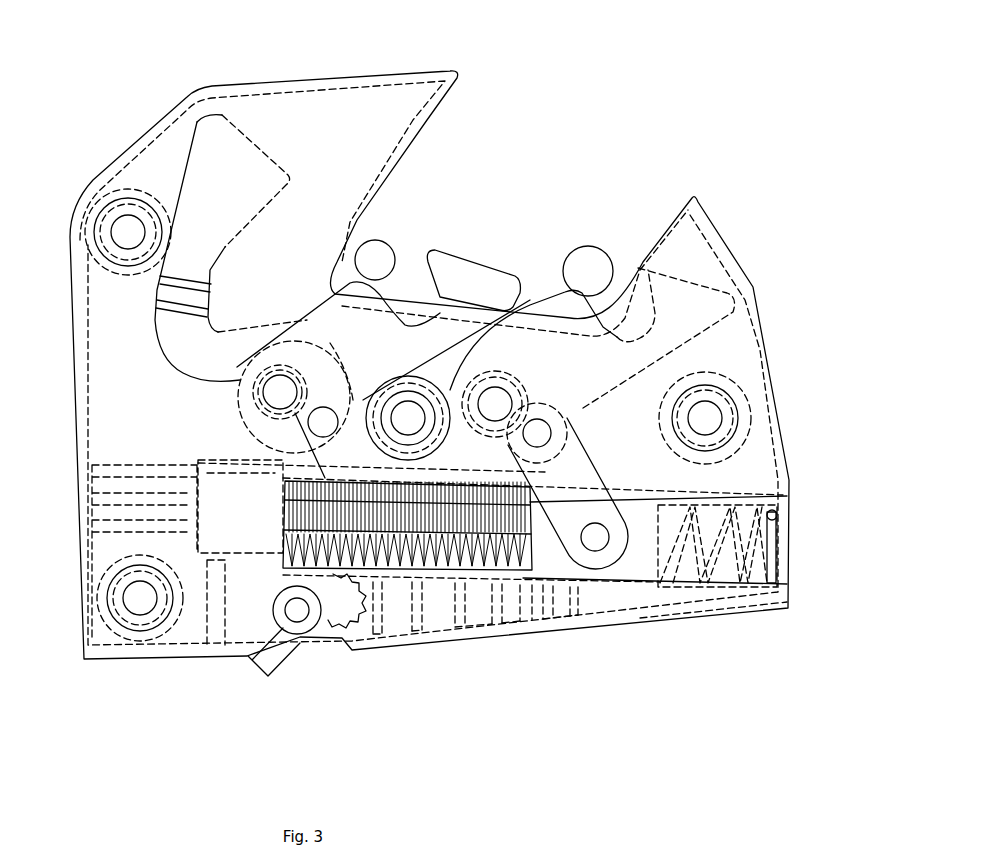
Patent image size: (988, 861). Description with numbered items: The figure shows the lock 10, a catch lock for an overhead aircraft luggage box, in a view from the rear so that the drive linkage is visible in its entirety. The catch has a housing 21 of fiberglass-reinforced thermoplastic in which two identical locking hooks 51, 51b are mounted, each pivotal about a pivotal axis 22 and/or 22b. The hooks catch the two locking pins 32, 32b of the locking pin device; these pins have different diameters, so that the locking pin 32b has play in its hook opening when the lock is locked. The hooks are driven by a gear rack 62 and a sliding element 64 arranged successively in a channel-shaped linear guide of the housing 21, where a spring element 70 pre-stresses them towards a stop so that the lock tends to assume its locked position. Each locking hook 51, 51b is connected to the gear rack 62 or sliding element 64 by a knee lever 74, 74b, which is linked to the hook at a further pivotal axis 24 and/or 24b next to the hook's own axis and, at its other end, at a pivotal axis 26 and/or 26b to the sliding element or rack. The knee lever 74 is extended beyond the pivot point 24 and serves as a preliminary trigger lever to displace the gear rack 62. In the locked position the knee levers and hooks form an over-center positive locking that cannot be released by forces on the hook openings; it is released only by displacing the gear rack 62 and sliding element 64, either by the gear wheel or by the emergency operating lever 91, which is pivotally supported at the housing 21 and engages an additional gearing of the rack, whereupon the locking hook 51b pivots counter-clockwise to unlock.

The lock 10 is at (580, 127).
The housing 21 is at (705, 208).
The pivotal axis 22 is at (497, 401).
The pivotal axis 22b is at (285, 391).
The pivotal axis 24 is at (538, 433).
The pivotal axis 24b is at (323, 422).
The pivotal axis 26 is at (595, 538).
The pivotal axis 26b is at (400, 566).
The locking pin 32 is at (590, 263).
The locking pin 32b is at (378, 258).
The locking hook 51 is at (577, 308).
The locking hook 51b is at (483, 282).
The gear rack 62 is at (455, 572).
The sliding element 64 is at (641, 556).
The spring element 70 is at (712, 540).
The knee lever 74 is at (572, 510).
The knee lever 74b is at (227, 152).
The emergency operating lever 91 is at (275, 655).